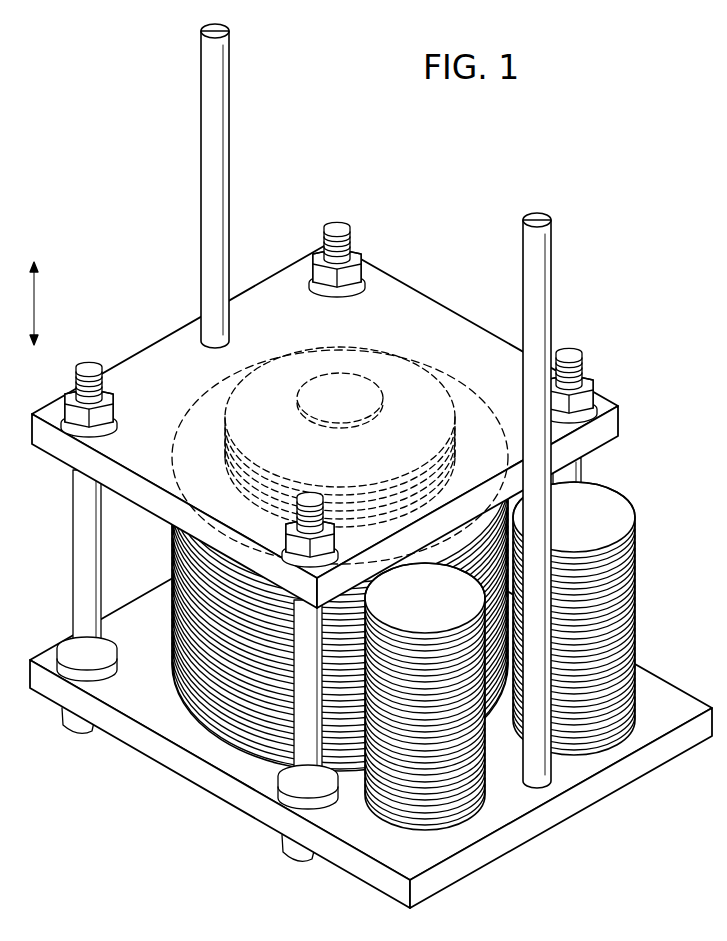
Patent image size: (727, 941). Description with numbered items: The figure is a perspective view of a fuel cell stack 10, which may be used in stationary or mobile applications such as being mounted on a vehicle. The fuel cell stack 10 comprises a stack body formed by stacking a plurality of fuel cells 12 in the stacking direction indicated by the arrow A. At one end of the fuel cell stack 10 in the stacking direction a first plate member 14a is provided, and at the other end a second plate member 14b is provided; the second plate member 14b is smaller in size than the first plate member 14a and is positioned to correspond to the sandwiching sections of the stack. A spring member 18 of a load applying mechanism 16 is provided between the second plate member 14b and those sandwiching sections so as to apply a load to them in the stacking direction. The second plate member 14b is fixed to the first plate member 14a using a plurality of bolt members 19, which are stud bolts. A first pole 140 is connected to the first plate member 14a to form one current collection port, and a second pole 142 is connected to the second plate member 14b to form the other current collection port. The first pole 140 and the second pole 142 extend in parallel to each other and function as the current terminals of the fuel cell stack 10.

The fuel cell stack 10 is at (610, 150).
The fuel cells 12 is at (636, 581).
The first plate member 14a is at (512, 838).
The second plate member 14b is at (325, 415).
The load applying mechanism 16 is at (256, 406).
The spring member 18 is at (295, 365).
The bolt members 19 is at (80, 550).
The first pole 140 is at (537, 270).
The second pole 142 is at (213, 75).